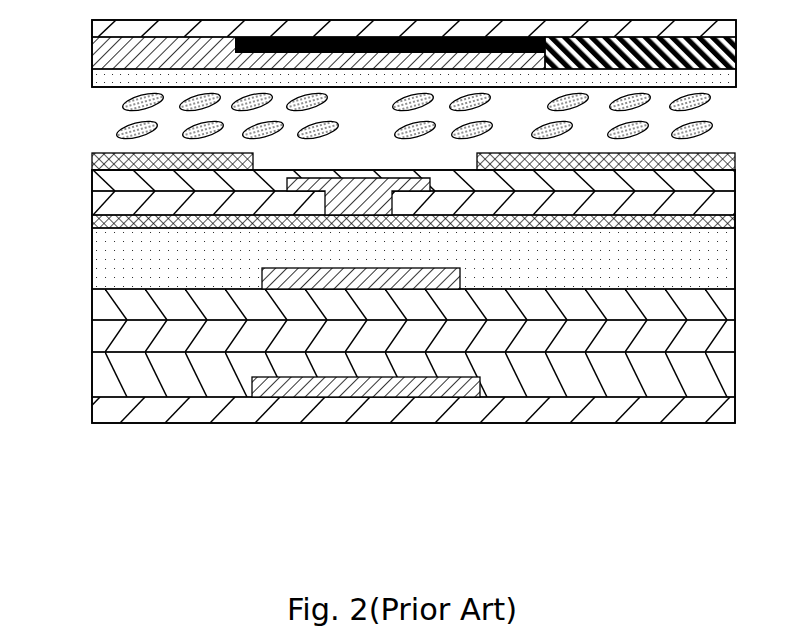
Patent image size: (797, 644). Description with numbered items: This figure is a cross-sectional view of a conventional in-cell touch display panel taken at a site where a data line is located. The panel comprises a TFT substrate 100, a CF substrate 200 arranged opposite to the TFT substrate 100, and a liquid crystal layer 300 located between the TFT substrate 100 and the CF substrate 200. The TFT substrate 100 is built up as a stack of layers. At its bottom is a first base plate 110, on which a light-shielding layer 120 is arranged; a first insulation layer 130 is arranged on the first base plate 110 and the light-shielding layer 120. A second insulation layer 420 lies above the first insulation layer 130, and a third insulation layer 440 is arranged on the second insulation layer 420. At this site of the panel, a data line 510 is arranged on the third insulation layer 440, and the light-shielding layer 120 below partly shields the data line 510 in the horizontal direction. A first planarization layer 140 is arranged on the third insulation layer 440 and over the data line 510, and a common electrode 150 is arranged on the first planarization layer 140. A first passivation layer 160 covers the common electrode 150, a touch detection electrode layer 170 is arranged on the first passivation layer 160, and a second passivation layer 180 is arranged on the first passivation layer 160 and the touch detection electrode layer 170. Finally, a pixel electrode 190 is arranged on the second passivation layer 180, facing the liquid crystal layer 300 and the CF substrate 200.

The TFT substrate 100 is at (73, 160).
The first base plate 110 is at (138, 408).
The light-shielding layer 120 is at (267, 392).
The first insulation layer 130 is at (215, 390).
The first planarization layer 140 is at (572, 273).
The common electrode 150 is at (520, 228).
The first passivation layer 160 is at (467, 200).
The touch detection electrode layer 170 is at (350, 197).
The second passivation layer 180 is at (715, 177).
The pixel electrode 190 is at (715, 160).
The CF substrate 200 is at (73, 20).
The liquid crystal layer 300 is at (128, 129).
The second insulation layer 420 is at (650, 337).
The third insulation layer 440 is at (705, 300).
The data line 510 is at (312, 276).